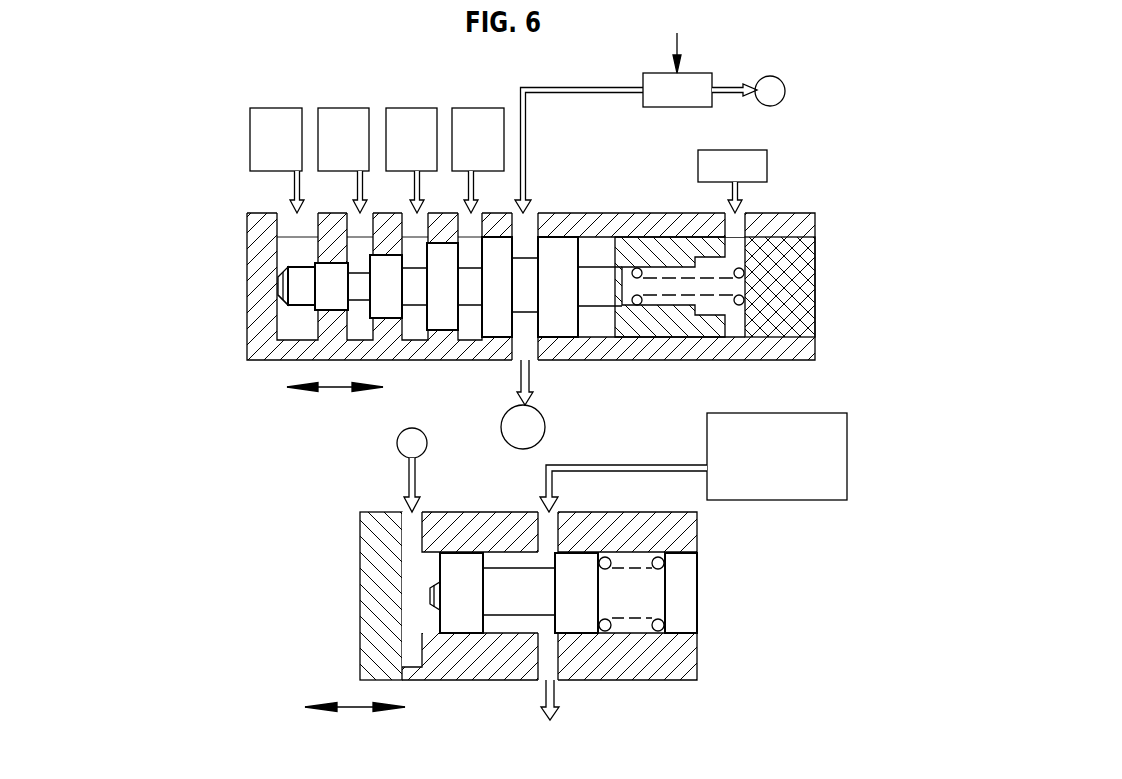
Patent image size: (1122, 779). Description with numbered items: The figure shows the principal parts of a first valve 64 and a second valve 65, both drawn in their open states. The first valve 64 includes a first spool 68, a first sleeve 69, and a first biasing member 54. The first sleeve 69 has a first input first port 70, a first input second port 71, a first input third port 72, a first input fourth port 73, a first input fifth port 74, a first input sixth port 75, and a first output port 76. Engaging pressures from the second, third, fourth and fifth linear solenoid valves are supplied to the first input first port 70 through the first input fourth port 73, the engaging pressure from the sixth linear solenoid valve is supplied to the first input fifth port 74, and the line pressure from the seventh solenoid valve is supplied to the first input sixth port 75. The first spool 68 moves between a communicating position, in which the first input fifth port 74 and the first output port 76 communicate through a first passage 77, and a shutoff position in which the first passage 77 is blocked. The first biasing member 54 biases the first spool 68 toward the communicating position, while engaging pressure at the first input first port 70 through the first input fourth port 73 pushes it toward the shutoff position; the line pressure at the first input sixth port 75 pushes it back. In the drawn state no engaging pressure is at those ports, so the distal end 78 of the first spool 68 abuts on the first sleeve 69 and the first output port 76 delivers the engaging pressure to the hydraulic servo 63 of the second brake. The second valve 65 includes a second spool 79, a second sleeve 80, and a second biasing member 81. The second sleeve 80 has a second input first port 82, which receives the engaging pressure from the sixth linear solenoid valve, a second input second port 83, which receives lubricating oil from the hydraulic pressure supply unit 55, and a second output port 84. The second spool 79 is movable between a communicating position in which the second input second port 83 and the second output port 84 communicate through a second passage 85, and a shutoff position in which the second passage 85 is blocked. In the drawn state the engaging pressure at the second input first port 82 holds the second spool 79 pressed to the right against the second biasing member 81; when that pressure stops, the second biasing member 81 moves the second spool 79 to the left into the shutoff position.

The first biasing member 54 is at (740, 307).
The hydraulic pressure supply unit 55 is at (777, 500).
The hydraulic servo 63 is at (546, 427).
The first valve 64 is at (499, 227).
The second valve 65 is at (478, 589).
The first spool 68 is at (256, 266).
The first sleeve 69 is at (262, 327).
The first input first port 70 is at (290, 213).
The first input second port 71 is at (350, 213).
The first input third port 72 is at (405, 213).
The first input fourth port 73 is at (461, 213).
The first input fifth port 74 is at (514, 213).
The first input sixth port 75 is at (727, 213).
The first output port 76 is at (515, 362).
The first passage 77 is at (541, 213).
The distal end 78 is at (282, 296).
The second spool 79 is at (413, 574).
The second sleeve 80 is at (375, 640).
The second biasing member 81 is at (661, 568).
The second input first port 82 is at (421, 512).
The second input second port 83 is at (541, 512).
The second output port 84 is at (541, 681).
The second passage 85 is at (551, 648).